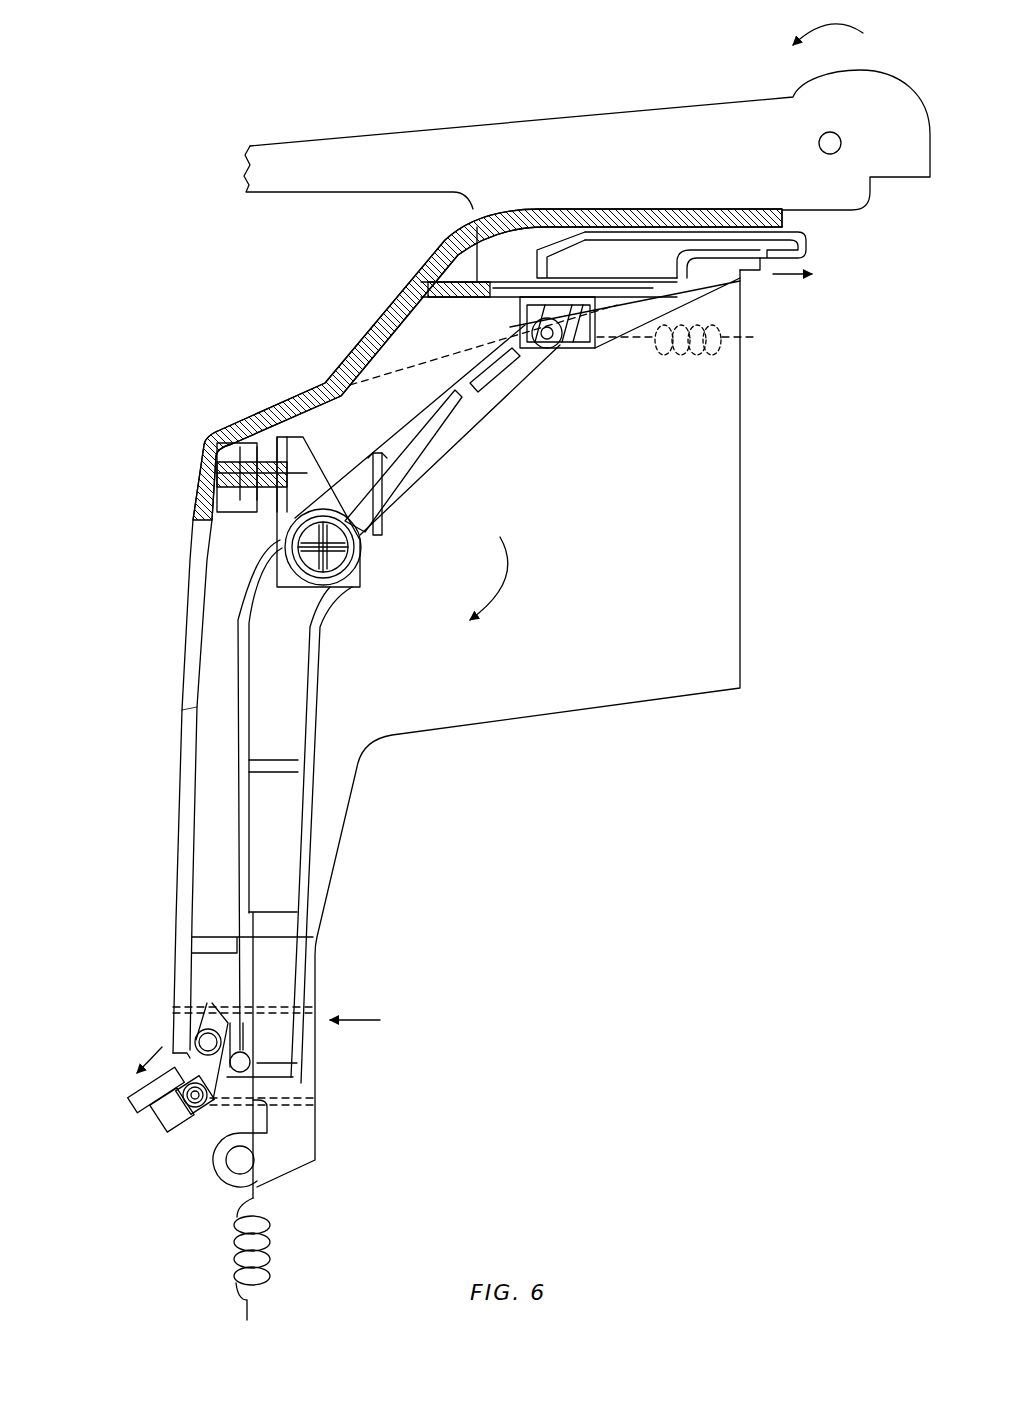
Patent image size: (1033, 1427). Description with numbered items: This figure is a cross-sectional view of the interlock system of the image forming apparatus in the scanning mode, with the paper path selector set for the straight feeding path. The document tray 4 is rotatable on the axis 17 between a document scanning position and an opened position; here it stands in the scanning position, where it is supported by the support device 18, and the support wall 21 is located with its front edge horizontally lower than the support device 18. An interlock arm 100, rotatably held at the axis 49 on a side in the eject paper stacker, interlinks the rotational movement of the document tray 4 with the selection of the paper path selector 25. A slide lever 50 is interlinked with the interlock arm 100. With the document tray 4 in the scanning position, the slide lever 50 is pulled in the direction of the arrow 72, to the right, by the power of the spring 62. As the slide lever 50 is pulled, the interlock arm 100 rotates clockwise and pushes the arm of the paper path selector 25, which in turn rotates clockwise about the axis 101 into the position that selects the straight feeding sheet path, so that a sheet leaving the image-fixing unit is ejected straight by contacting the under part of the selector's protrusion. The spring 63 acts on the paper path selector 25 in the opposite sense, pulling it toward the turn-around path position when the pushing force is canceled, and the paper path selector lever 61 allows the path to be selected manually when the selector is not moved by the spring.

The document tray 4 is at (604, 112).
The axis 17 is at (841, 143).
The support device 18 is at (518, 228).
The support wall 21 is at (186, 594).
The paper path selector 25 is at (222, 1115).
The axis 49 is at (333, 555).
The slide lever 50 is at (697, 270).
The paper path selector lever 61 is at (128, 1108).
The spring 62 is at (674, 363).
The spring 63 is at (272, 1242).
The arrow 72 is at (793, 282).
The interlock arm 100 is at (330, 673).
The axis 101 is at (172, 1120).